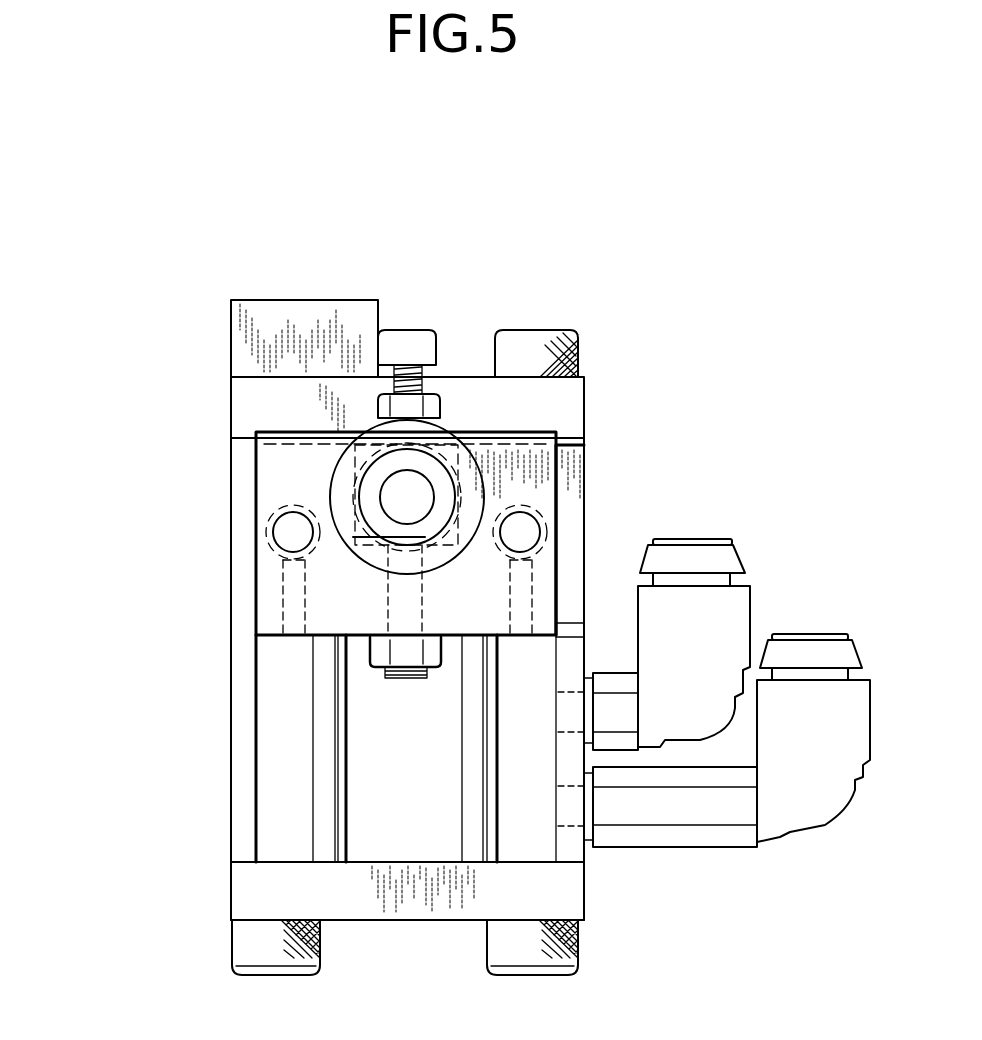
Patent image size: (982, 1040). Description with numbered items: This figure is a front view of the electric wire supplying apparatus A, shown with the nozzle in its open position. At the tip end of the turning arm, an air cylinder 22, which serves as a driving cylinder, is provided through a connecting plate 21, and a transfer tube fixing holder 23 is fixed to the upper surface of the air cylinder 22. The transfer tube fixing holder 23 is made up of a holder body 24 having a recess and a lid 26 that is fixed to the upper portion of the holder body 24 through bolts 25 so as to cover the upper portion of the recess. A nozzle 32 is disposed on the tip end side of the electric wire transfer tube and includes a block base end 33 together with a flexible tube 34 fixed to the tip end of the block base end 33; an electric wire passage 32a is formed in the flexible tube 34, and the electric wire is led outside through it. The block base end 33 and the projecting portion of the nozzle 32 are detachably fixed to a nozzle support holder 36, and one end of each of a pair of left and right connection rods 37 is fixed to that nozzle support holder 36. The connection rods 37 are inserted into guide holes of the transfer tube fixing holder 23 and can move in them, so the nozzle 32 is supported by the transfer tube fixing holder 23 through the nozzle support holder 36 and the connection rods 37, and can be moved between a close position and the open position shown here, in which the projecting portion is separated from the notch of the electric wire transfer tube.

The electric wire supplying apparatus A is at (128, 260).
The connecting plate 21 is at (268, 890).
The air cylinder 22 is at (275, 808).
The transfer tube fixing holder 23 is at (703, 330).
The holder body 24 is at (583, 473).
The bolts 25 is at (287, 310).
The lid 26 is at (583, 398).
The nozzle 32 is at (256, 500).
The electric wire passage 32a is at (405, 500).
The block base end 33 is at (360, 465).
The flexible tube 34 is at (372, 480).
The nozzle support holder 36 is at (496, 470).
The connection rods 37 is at (272, 530).